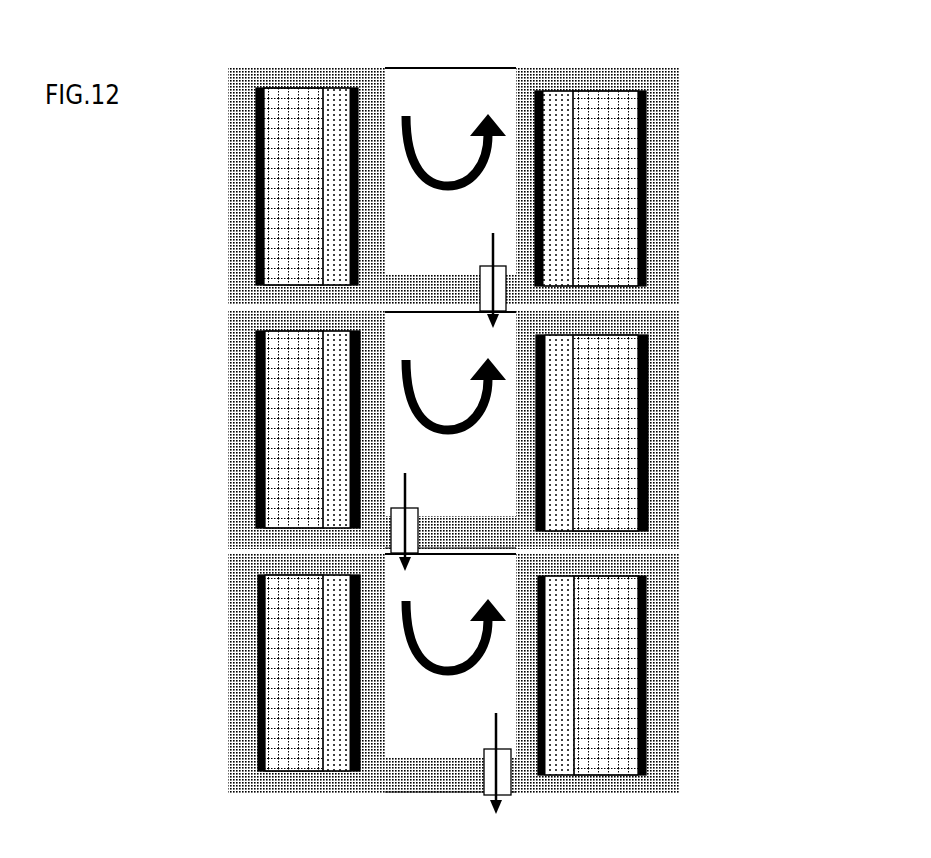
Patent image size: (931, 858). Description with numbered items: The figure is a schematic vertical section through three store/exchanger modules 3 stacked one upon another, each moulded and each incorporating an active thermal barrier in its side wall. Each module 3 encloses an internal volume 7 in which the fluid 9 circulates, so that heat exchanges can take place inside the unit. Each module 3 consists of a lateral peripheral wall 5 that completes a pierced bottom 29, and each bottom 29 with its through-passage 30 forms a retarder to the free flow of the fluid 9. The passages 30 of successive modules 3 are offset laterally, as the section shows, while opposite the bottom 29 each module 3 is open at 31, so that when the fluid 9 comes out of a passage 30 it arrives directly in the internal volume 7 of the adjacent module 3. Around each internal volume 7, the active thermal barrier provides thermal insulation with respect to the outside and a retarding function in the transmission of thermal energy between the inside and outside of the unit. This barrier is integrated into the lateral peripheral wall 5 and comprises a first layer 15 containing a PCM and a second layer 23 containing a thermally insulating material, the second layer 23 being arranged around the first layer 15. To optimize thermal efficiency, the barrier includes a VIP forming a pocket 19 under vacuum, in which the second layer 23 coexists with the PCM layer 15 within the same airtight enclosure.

The module 3 is at (208, 235).
The lateral peripheral wall 5 is at (223, 172).
The internal volume 7 is at (451, 416).
The fluid 9 is at (495, 787).
The first layer 15 is at (557, 217).
The pocket 19 is at (643, 113).
The second layer 23 is at (625, 257).
The bottom 29 is at (463, 532).
The through-passage 30 is at (478, 272).
The opening 31 is at (408, 72).